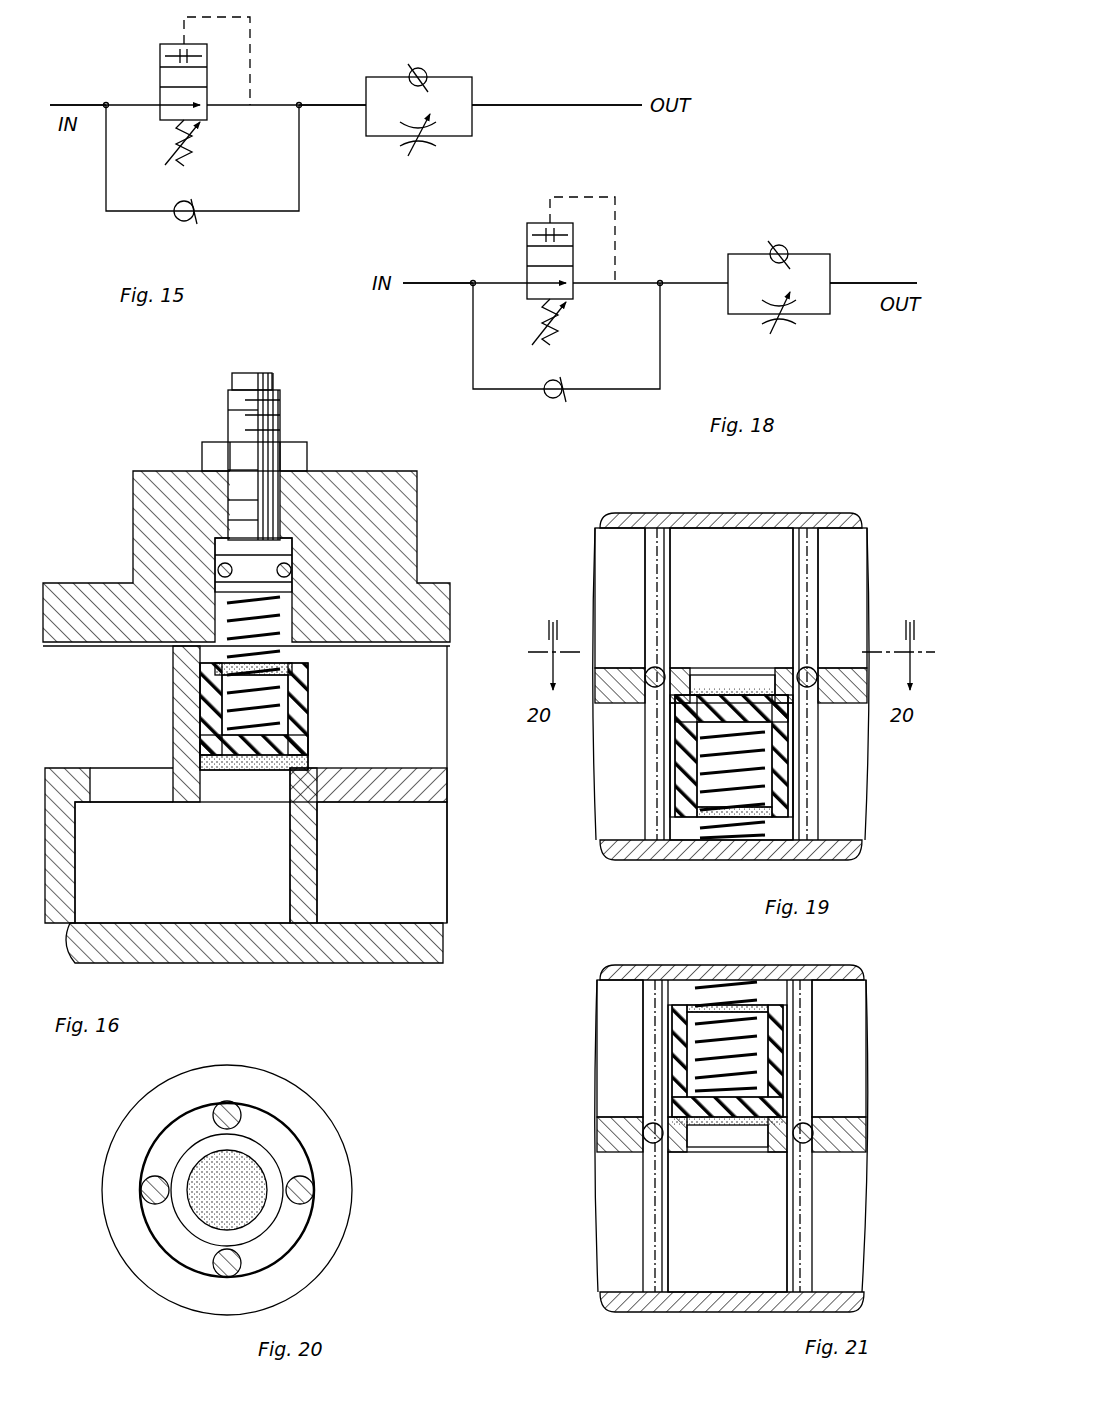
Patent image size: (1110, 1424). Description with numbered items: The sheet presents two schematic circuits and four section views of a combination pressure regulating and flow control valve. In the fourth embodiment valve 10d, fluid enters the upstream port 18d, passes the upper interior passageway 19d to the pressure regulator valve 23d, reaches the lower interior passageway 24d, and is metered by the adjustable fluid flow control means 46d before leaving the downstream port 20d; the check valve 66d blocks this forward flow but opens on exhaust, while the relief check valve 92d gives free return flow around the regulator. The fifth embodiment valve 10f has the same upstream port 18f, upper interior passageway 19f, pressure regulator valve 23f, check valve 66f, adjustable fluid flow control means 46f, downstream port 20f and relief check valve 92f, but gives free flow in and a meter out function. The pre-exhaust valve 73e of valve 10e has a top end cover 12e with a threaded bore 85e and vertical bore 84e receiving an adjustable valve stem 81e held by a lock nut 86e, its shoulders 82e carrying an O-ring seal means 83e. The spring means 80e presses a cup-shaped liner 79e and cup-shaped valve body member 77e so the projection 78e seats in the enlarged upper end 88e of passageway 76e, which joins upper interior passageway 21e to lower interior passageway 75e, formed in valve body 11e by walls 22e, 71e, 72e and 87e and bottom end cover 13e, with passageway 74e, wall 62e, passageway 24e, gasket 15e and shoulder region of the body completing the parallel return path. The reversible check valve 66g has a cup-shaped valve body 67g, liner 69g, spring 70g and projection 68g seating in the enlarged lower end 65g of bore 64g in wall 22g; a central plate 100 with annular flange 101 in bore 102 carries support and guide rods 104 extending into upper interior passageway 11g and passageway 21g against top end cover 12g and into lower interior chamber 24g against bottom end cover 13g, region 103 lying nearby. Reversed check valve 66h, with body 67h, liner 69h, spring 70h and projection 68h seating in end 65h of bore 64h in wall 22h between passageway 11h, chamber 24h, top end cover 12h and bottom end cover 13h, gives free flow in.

In FIG. 15, the upstream port 18d is at (62, 100).
In FIG. 15, the upper interior passageway 19d is at (106, 100).
In FIG. 15, the pressure regulator valve 23d is at (166, 44).
In FIG. 15, the combination pressure regulating and flow control valve 10d is at (256, 22).
In FIG. 15, the lower interior passageway 24d is at (322, 100).
In FIG. 15, the check valve 66d is at (428, 70).
In FIG. 15, the adjustable fluid flow control means 46d is at (424, 150).
In FIG. 15, the downstream port 20d is at (556, 103).
In FIG. 15, the relief check valve 92d is at (198, 204).
In FIG. 18, the upstream port 18f is at (421, 280).
In FIG. 18, the upper interior passageway 19f is at (473, 280).
In FIG. 18, the pressure regulator valve 23f is at (527, 230).
In FIG. 18, the combination pressure regulating and flow control valve 10f is at (620, 212).
In FIG. 18, the check valve 66f is at (772, 244).
In FIG. 18, the adjustable fluid flow control means 46f is at (792, 330).
In FIG. 18, the downstream port 20f is at (858, 281).
In FIG. 18, the relief check valve 92f is at (568, 380).
In FIG. 16, the adjustable valve stem 81e is at (270, 380).
In FIG. 16, the threaded bore 85e is at (235, 480).
In FIG. 16, the pre-exhaust valve 73e is at (300, 446).
In FIG. 16, the lock nut 86e is at (305, 455).
In FIG. 16, the vertical bore 84e is at (292, 540).
In FIG. 16, the combination pressure regulating and flow control valve 10e is at (378, 468).
In FIG. 16, the top end cover 12e is at (398, 500).
In FIG. 16, the annular flanges or shoulders 82e is at (222, 580).
In FIG. 16, the O-ring seal means 83e is at (290, 572).
In FIG. 16, the upper interior passageway 21e is at (83, 642).
In FIG. 16, the gasket 15e is at (440, 645).
In FIG. 16, the cup-shaped liner 79e is at (262, 668).
In FIG. 16, the valve body 11e is at (430, 690).
In FIG. 16, the cup-shaped valve body member 77e is at (292, 700).
In FIG. 16, the valve body interior wall 62e is at (173, 712).
In FIG. 16, the spring means 80e is at (295, 725).
In FIG. 16, the enlarged upper end 88e is at (305, 760).
In FIG. 16, the passageway 74e is at (97, 800).
In FIG. 16, the bore or passageway 76e is at (215, 790).
In FIG. 16, the annular axially extended projection 78e is at (300, 770).
In FIG. 16, the valve body interior wall 22e is at (398, 800).
In FIG. 16, the valve body interior wall 87e is at (60, 862).
In FIG. 16, the lower interior passageway 75e is at (298, 870).
In FIG. 16, the valve body interior wall 71e is at (288, 878).
In FIG. 16, the lower interior passageway 24e is at (410, 920).
In FIG. 16, the bottom end cover 13e is at (430, 947).
In FIG. 16, the valve body interior wall 72e is at (270, 900).
In FIG. 19, the upper interior passageway 21g is at (702, 540).
In FIG. 19, the top end cover 12g is at (812, 520).
In FIG. 19, the support and guide rods 104 is at (795, 568).
In FIG. 20, the support and guide rods 104 is at (227, 1100).
In FIG. 21, the support and guide rods 104 is at (652, 1220).
In FIG. 19, the upper interior passageway 11g is at (845, 577).
In FIG. 19, the groove 103 is at (645, 672).
In FIG. 21, the groove 103 is at (815, 1127).
In FIG. 19, the annular axially extended projection 68g is at (683, 697).
In FIG. 19, the bore or passageway 64g is at (700, 690).
In FIG. 20, the bore or passageway 64g is at (200, 1212).
In FIG. 19, the enlarged lower end 65g is at (722, 678).
In FIG. 19, the central plate 100 is at (808, 667).
In FIG. 20, the central plate 100 is at (270, 1210).
In FIG. 21, the central plate 100 is at (795, 1150).
In FIG. 19, the annular flange 101 is at (812, 666).
In FIG. 21, the annular flange 101 is at (800, 1167).
In FIG. 19, the bore 102 is at (652, 707).
In FIG. 21, the bore 102 is at (647, 1158).
In FIG. 19, the check valve 66g is at (664, 782).
In FIG. 20, the check valve 66g is at (215, 1215).
In FIG. 19, the valve body interior longitudinal wall 22g is at (850, 700).
In FIG. 20, the valve body interior longitudinal wall 22g is at (318, 1122).
In FIG. 19, the cup-shaped valve body 67g is at (785, 765).
In FIG. 20, the cup-shaped valve body 67g is at (245, 1160).
In FIG. 19, the lower interior chamber 24g is at (833, 834).
In FIG. 19, the bottom end cover 13g is at (622, 855).
In FIG. 19, the cup-shaped liner 69g is at (700, 812).
In FIG. 19, the spring 70g is at (725, 820).
In FIG. 21, the spring 70h is at (722, 990).
In FIG. 21, the top end cover 12h is at (835, 974).
In FIG. 21, the upper interior passageway 11h is at (838, 1012).
In FIG. 21, the reversed check valve 66h is at (670, 1042).
In FIG. 21, the cup-shaped valve body 67h is at (778, 1035).
In FIG. 21, the cup-shaped liner 69h is at (780, 1068).
In FIG. 21, the valve body interior longitudinal wall 22h is at (845, 1127).
In FIG. 21, the annular axially extended projection 68h is at (687, 1147).
In FIG. 21, the enlarged end 65h is at (753, 1130).
In FIG. 21, the bore or passageway 64h is at (713, 1147).
In FIG. 21, the lower interior chamber 24h is at (833, 1290).
In FIG. 21, the bottom end cover 13h is at (647, 1303).